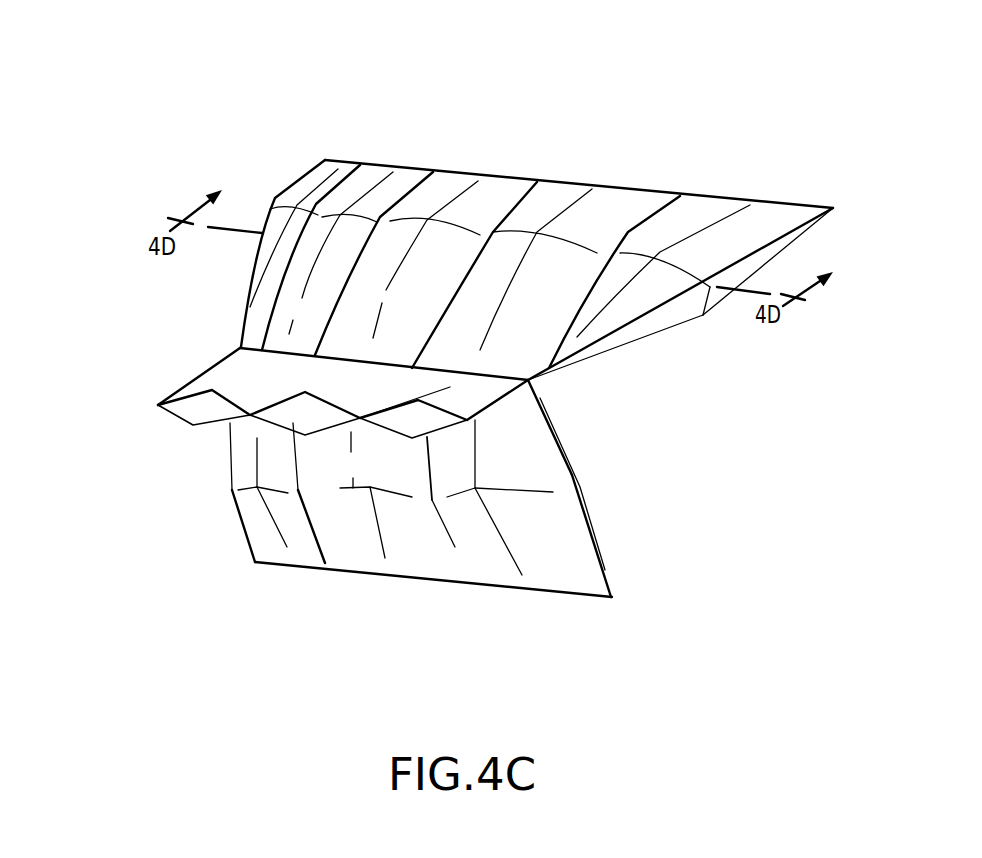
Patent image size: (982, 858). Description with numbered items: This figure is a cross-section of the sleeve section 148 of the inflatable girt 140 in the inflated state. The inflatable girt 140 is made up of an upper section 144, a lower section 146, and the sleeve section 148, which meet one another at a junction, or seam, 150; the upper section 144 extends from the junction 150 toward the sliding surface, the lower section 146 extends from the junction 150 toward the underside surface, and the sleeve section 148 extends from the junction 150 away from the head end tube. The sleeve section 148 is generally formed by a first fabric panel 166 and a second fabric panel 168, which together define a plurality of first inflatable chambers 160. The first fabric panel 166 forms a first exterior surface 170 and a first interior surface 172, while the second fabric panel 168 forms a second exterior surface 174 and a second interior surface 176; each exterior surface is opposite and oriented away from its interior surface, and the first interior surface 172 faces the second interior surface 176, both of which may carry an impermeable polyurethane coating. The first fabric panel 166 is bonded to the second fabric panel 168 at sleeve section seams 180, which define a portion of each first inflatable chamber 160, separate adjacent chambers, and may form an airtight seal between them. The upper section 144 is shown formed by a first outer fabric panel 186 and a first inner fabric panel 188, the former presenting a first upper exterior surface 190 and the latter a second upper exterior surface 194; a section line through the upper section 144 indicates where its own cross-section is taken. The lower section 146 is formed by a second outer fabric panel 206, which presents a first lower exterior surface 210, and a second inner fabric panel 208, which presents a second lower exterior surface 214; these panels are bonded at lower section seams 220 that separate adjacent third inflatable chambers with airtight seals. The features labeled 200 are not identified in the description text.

The inflatable girt 140 is at (136, 125).
The upper section 144 is at (407, 152).
The lower section 146 is at (620, 572).
The sleeve section 148 is at (156, 376).
The junction 150 is at (268, 352).
The first inflatable chambers 160 is at (165, 418).
The first fabric panel 166 is at (222, 373).
The second fabric panel 168 is at (205, 426).
The first exterior surface 170 is at (362, 395).
The first interior surface 172 is at (327, 407).
The second exterior surface 174 is at (455, 430).
The second interior surface 176 is at (442, 428).
The sleeve section seams 180 is at (313, 362).
The first outer fabric panel 186 is at (580, 227).
The first inner fabric panel 188 is at (665, 318).
The first upper exterior surface 190 is at (455, 262).
The second upper exterior surface 194 is at (704, 316).
The ridges 200 is at (290, 183).
The second outer fabric panel 206 is at (417, 550).
The second inner fabric panel 208 is at (583, 502).
The first lower exterior surface 210 is at (543, 532).
The second lower exterior surface 214 is at (580, 477).
The lower section seams 220 is at (243, 533).